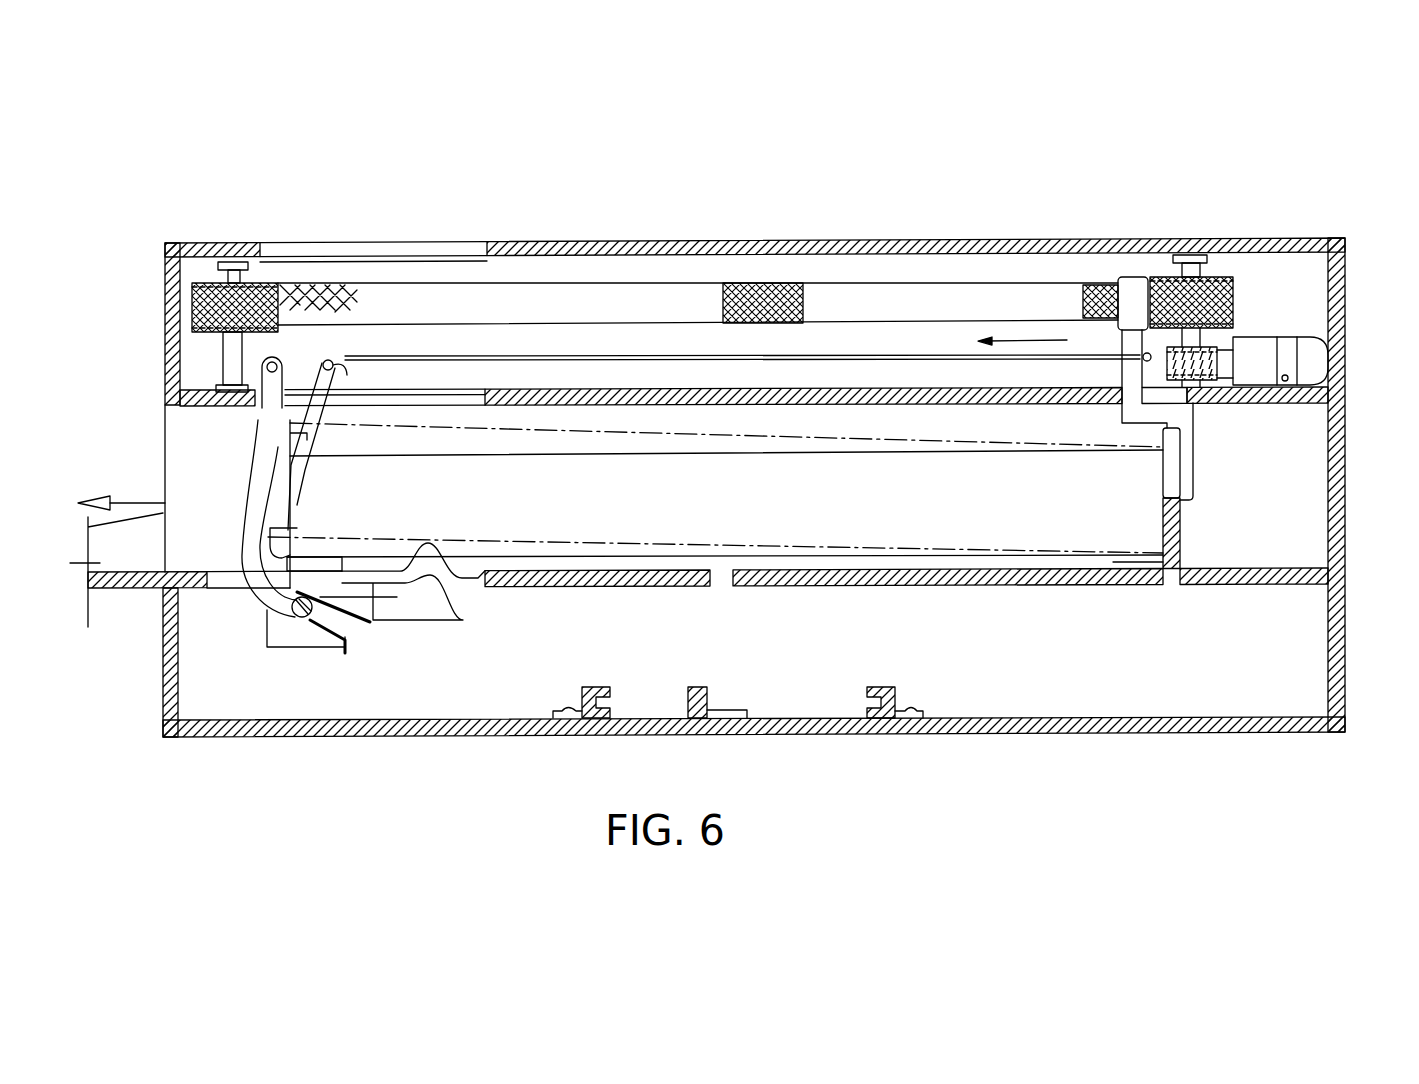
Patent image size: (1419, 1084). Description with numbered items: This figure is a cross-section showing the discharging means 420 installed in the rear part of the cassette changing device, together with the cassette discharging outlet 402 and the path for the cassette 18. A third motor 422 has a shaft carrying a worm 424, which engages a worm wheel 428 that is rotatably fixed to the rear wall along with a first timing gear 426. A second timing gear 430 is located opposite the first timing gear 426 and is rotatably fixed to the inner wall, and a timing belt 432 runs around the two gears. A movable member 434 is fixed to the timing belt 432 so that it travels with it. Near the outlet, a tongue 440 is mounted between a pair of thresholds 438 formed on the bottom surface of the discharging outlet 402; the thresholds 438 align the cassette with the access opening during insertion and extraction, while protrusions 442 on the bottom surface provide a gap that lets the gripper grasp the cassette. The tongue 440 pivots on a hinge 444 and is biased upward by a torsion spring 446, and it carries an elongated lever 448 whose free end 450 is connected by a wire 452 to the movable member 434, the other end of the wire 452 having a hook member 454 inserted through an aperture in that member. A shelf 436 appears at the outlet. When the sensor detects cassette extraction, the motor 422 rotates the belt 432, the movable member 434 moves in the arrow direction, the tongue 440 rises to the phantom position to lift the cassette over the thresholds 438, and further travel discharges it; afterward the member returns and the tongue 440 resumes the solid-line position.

The sheet / paper path 18 is at (740, 504).
The cassette discharging outlet 402 is at (210, 515).
The discharging means 420 is at (868, 237).
The third motor 422 is at (1300, 357).
The worm 424 is at (1220, 357).
The first timing gear 426 is at (1228, 277).
The worm wheel 428 is at (1207, 385).
The second timing gear 430 is at (218, 262).
The timing belt 432 is at (693, 308).
The movable member 434 is at (1172, 478).
The shelf 436 is at (197, 597).
The thresholds 438 is at (287, 530).
The tongue 440 is at (447, 607).
The protrusions 442 is at (1145, 570).
The hinge 444 is at (300, 622).
The torsion spring 446 is at (385, 625).
The elongated lever 448 is at (307, 433).
The free end 450 is at (325, 355).
The wire 452 is at (577, 357).
The hook member 454 is at (1143, 360).